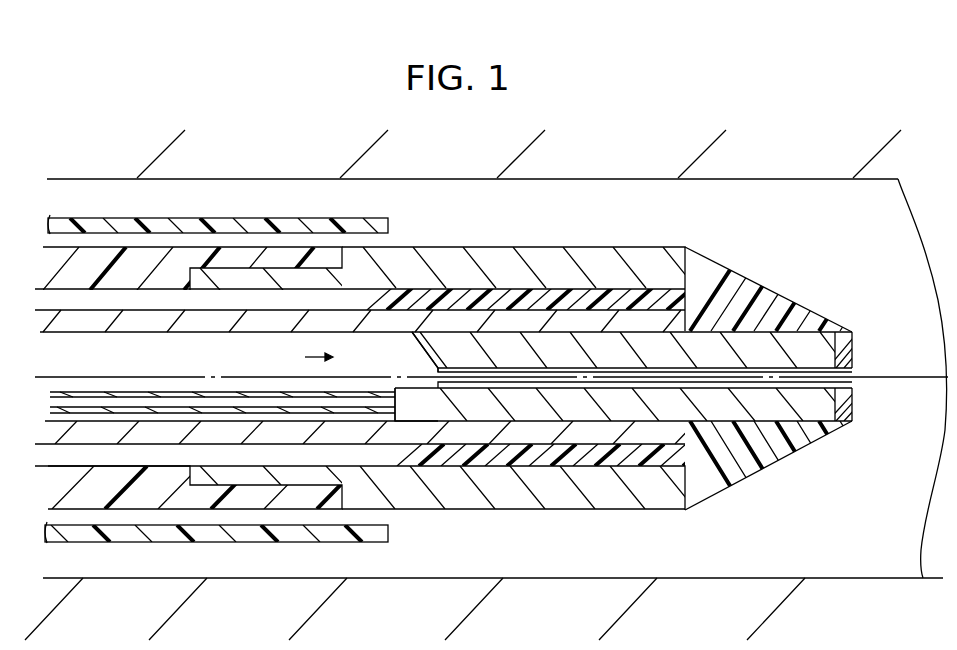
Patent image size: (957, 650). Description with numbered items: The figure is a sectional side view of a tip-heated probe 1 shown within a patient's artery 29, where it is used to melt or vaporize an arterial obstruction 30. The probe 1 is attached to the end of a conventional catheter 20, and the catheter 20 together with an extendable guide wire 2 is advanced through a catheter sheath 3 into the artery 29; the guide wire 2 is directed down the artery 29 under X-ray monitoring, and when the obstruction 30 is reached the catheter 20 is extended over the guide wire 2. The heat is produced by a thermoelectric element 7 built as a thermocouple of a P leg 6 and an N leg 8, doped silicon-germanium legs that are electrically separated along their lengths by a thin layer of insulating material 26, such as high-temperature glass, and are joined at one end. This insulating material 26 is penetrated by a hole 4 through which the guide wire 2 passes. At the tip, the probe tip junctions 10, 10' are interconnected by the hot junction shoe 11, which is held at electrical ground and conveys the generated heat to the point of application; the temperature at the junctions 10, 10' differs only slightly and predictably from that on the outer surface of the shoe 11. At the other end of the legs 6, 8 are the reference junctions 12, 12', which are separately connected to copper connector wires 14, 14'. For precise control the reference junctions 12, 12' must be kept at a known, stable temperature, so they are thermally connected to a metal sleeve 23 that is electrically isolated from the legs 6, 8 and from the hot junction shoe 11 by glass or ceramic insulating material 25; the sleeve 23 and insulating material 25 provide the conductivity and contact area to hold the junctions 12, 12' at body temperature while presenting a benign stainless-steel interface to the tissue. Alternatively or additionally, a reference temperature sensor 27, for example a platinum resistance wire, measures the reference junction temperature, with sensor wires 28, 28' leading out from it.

The probe 1 is at (790, 263).
The guide wire 2 is at (915, 376).
The sheath 3 is at (371, 229).
The hole 4 is at (856, 377).
The P leg 6 is at (801, 344).
The thermoelectric element 7 is at (310, 355).
The N leg 8 is at (772, 437).
The probe tip junction 10 is at (863, 339).
The probe tip junction 10' is at (646, 404).
The hot junction shoe 11 is at (848, 356).
The reference junction 12 is at (363, 270).
The reference junction 12' is at (371, 482).
The connector wire 14 is at (446, 339).
The connector wire 14' is at (448, 442).
The catheter 20 is at (147, 258).
The metal sleeve 23 is at (463, 256).
The insulating material 25 is at (725, 279).
The insulating material 26 is at (438, 371).
The reference temperature sensor 27 is at (412, 400).
The sensor wire 28 is at (222, 381).
The sensor wire 28' is at (222, 382).
The artery 29 is at (688, 576).
The obstruction 30 is at (943, 523).